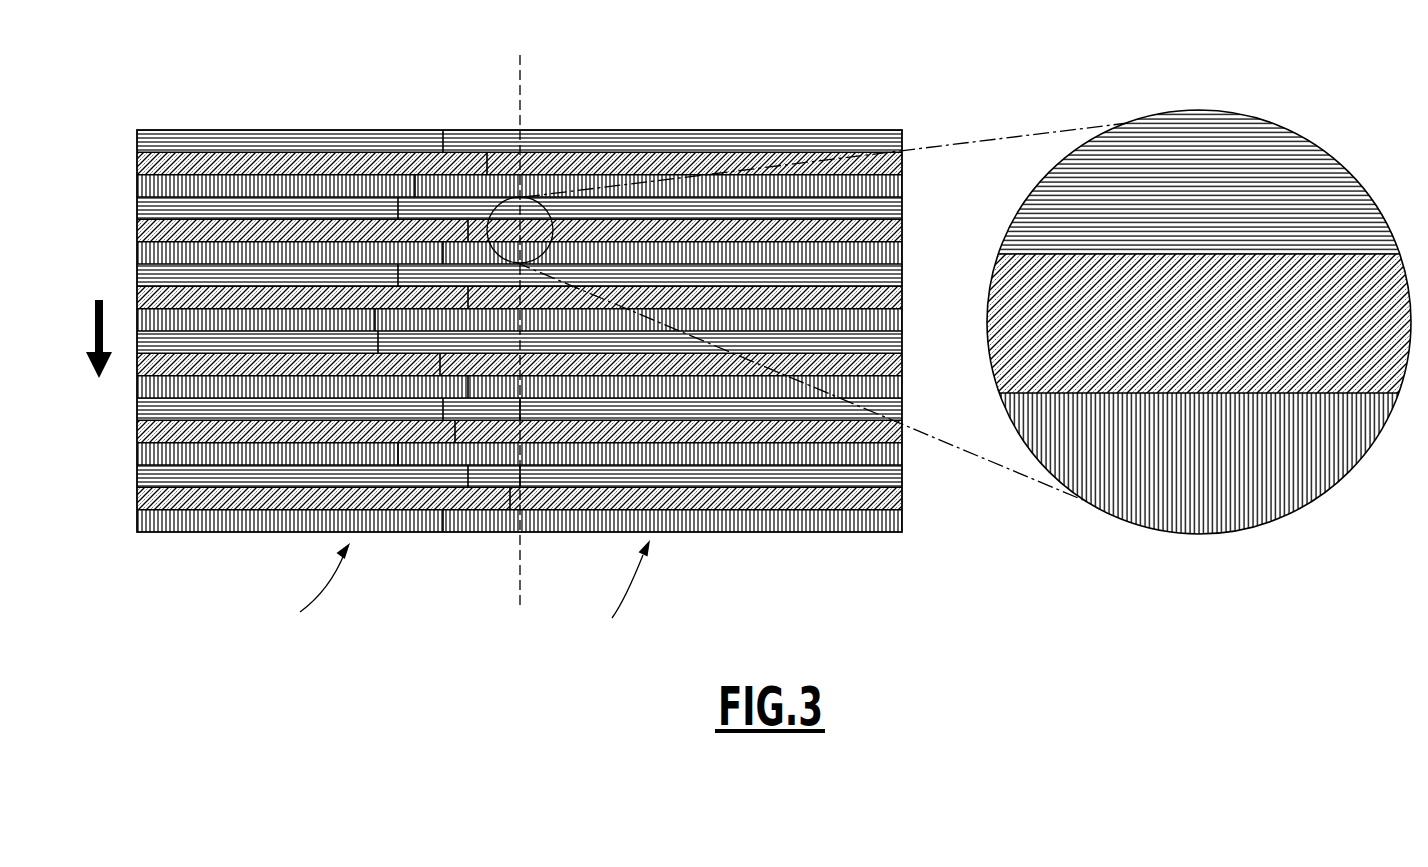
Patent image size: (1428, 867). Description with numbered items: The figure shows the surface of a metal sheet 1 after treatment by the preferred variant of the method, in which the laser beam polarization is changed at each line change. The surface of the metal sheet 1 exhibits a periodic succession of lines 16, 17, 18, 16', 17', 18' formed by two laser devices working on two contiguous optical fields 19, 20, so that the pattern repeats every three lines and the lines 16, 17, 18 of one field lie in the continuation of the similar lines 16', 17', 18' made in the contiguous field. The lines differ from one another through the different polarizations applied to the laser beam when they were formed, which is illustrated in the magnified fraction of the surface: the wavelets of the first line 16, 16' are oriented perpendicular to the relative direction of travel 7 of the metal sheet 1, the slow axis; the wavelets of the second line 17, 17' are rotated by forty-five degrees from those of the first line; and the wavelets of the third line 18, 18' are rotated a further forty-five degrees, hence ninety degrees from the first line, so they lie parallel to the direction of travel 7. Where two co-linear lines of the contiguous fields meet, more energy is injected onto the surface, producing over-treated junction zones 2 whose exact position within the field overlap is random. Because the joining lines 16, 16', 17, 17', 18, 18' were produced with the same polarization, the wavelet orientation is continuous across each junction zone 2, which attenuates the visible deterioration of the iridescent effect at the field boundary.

The metal sheet 1 is at (558, 319).
The junction zone 2 is at (447, 518).
The relative direction of travel (slow axis) 7 is at (103, 329).
The first line 16 is at (519, 92).
The second line 17 is at (519, 102).
The third line 18 is at (519, 114).
The first line of contiguous field 16' is at (1080, 146).
The second line of contiguous field 17' is at (1144, 288).
The third line of contiguous field 18' is at (1199, 474).
The optical field 19 is at (311, 593).
The optical field 20 is at (618, 598).